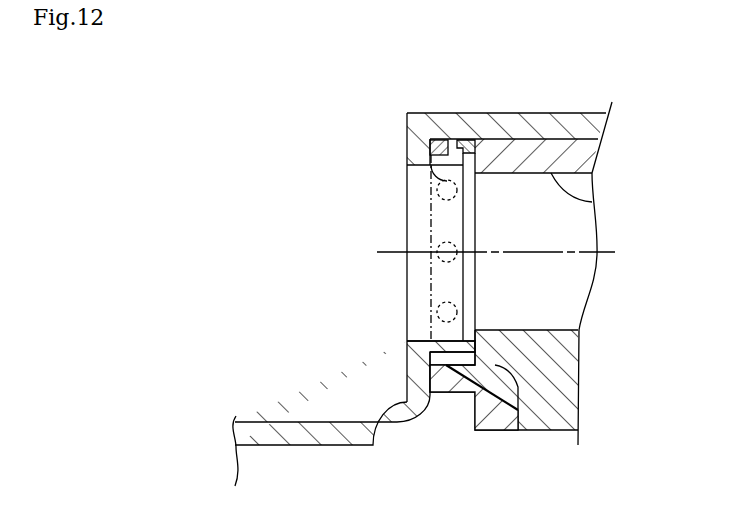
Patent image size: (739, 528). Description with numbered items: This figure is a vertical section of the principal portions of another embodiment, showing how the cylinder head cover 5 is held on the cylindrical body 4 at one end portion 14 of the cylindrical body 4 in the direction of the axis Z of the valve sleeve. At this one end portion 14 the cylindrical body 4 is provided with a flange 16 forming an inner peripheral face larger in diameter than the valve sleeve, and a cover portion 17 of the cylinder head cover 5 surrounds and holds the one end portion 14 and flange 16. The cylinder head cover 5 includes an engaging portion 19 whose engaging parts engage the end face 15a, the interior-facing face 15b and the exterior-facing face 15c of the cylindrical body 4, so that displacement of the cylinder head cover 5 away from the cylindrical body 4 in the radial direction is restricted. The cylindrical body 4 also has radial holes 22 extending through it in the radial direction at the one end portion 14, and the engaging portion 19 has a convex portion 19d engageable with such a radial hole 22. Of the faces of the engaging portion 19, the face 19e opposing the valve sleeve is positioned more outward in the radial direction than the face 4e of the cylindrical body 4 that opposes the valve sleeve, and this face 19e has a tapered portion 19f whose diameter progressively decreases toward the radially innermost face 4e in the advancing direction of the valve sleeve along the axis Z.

The cylindrical body 4 is at (527, 143).
The face of the cylindrical body 4e is at (592, 200).
The cylinder head cover 5 is at (580, 113).
The one end portion 14 is at (440, 130).
The end face 15a is at (424, 357).
The interior-facing face 15b is at (446, 340).
The exterior-facing face 15c is at (445, 376).
The flange 16 is at (430, 145).
The cover portion 17 is at (400, 133).
The engaging portion 19 is at (436, 198).
The convex portion 19d is at (448, 138).
The face of the engaging portion 19e is at (445, 168).
The tapered portion 19f is at (466, 170).
The radial hole 22 is at (440, 127).
The axis Z is at (488, 253).